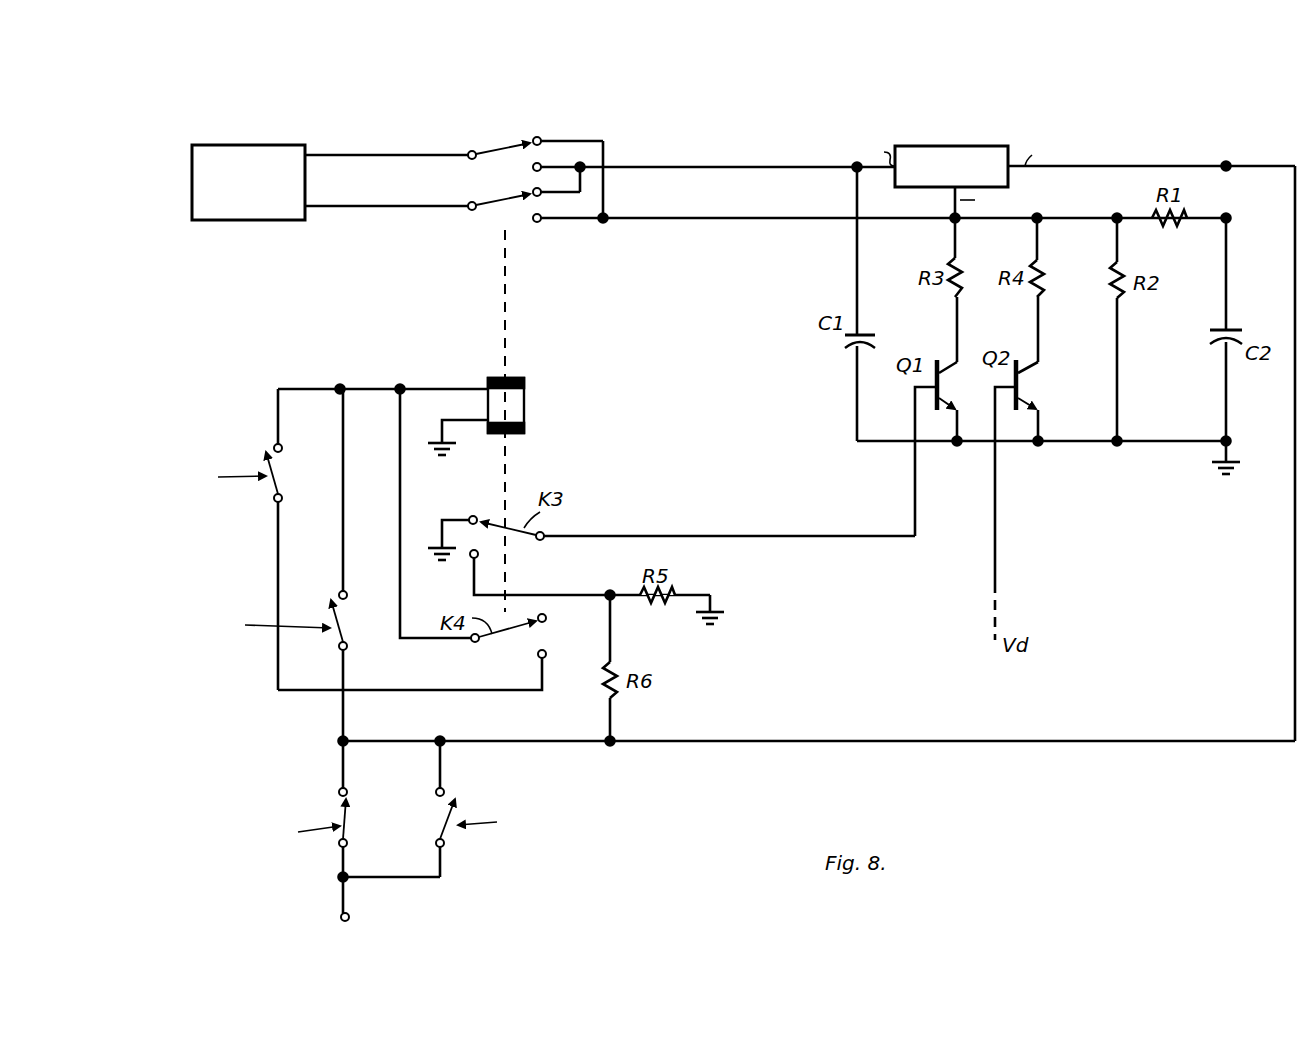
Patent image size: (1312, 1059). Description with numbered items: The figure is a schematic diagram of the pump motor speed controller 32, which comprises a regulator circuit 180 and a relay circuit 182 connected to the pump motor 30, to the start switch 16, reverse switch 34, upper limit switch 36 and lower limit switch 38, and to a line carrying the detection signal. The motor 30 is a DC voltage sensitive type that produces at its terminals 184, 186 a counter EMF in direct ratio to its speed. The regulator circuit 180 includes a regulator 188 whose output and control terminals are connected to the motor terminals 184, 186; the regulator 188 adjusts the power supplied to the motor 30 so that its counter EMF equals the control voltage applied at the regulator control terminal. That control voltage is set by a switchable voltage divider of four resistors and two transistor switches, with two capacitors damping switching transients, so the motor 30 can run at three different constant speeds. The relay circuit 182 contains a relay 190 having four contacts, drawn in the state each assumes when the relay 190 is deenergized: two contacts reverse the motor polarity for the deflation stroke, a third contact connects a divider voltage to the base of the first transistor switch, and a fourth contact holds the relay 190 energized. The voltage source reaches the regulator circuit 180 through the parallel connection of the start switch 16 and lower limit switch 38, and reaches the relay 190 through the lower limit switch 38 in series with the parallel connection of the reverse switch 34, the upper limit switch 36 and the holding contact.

The pump motor 30 is at (203, 145).
The pump motor speed controller 32 is at (470, 100).
The motor terminal 184 is at (345, 155).
The motor terminal 186 is at (340, 206).
The regulator circuit 180 is at (838, 150).
The regulator 188 is at (957, 146).
The relay circuit 182 is at (564, 421).
The relay 190 is at (525, 420).
The upper limit switch 36 is at (255, 465).
The reverse switch 34 is at (320, 612).
The lower limit switch 38 is at (352, 812).
The start switch 16 is at (462, 812).